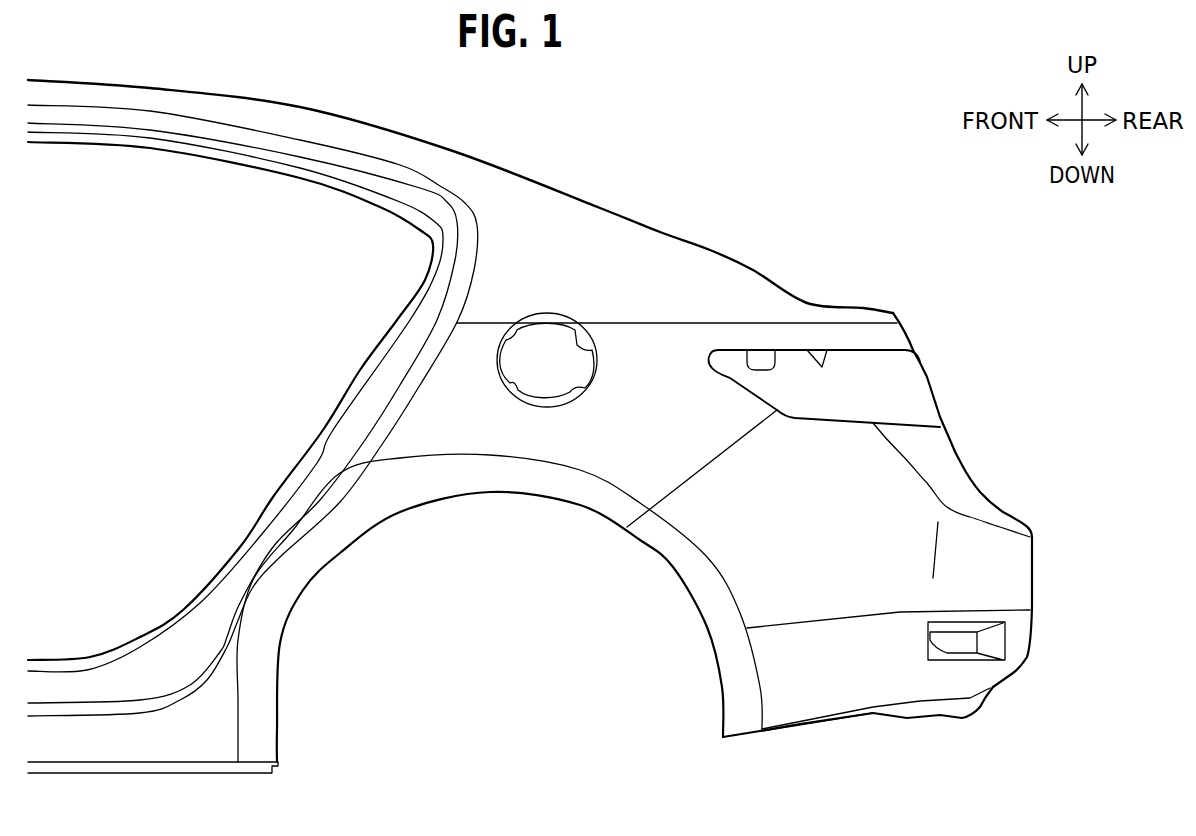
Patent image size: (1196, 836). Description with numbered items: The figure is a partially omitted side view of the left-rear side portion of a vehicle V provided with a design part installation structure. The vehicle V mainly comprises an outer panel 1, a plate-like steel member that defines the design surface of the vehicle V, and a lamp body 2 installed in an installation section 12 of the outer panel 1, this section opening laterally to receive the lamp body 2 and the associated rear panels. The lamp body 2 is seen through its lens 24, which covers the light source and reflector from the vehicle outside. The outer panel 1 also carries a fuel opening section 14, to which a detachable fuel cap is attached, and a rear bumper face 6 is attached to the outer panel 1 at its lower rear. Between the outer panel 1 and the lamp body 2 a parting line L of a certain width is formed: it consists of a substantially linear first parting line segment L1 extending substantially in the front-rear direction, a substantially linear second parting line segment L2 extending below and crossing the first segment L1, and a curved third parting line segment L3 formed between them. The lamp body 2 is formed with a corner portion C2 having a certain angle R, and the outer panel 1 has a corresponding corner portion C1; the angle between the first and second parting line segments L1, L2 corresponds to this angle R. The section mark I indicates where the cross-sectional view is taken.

The outer panel 1 is at (673, 417).
The lamp body 2 is at (872, 386).
The lens 24 is at (907, 390).
The rear bumper face 6 is at (755, 537).
The installation section 12 is at (822, 367).
The fuel opening section 14 is at (575, 345).
The vehicle V is at (798, 157).
The parting line L is at (885, 337).
The first parting line segment L1 is at (862, 350).
The second parting line segment L2 is at (750, 410).
The third parting line segment L3 is at (712, 362).
The corner portion C1 is at (727, 372).
The corner portion C2 is at (727, 372).
The angle R is at (775, 362).
The section line I is at (690, 355).